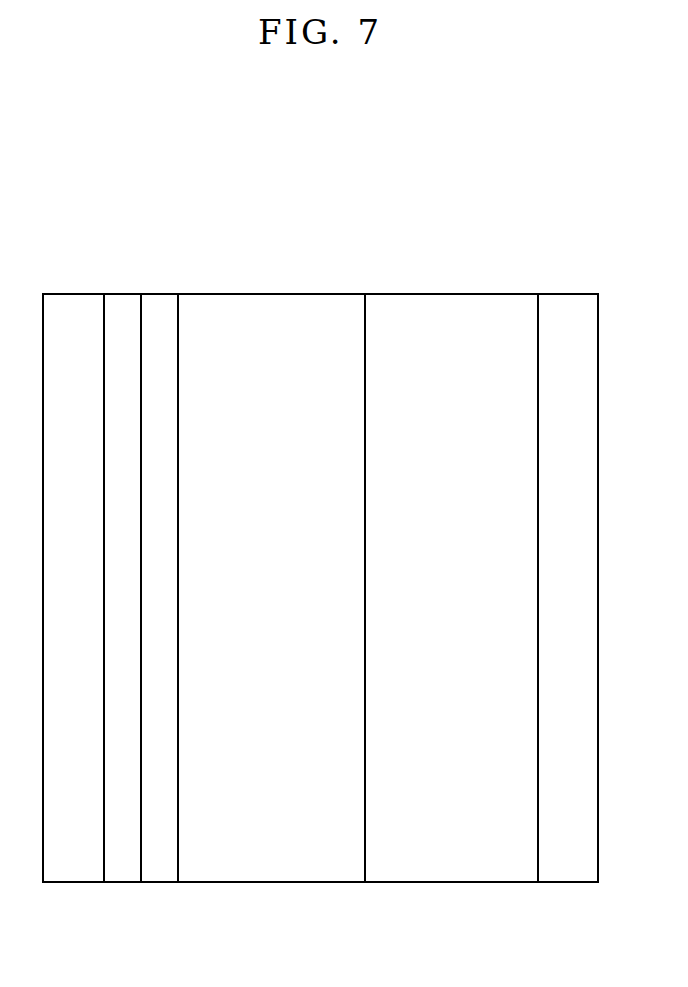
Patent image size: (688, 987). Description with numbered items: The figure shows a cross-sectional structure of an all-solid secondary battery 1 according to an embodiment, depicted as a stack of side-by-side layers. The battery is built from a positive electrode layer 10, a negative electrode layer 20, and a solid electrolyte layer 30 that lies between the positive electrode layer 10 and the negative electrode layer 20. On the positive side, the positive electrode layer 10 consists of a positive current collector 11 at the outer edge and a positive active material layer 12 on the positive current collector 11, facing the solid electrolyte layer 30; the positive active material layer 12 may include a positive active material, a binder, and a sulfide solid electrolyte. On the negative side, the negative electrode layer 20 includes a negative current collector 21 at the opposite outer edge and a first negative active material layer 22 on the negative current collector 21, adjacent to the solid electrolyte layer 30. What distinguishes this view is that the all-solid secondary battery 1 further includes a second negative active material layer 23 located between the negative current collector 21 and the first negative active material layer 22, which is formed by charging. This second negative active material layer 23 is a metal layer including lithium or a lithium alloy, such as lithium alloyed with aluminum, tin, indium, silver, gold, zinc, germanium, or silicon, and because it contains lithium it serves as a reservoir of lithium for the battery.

The all-solid secondary battery 1 is at (375, 229).
The positive electrode layer 10 is at (447, 209).
The positive current collector 11 is at (570, 300).
The positive active material layer 12 is at (454, 300).
The negative electrode layer 20 is at (173, 209).
The negative current collector 21 is at (73, 300).
The first negative active material layer 22 is at (162, 300).
The second negative active material layer 23 is at (123, 300).
The solid electrolyte layer 30 is at (273, 305).